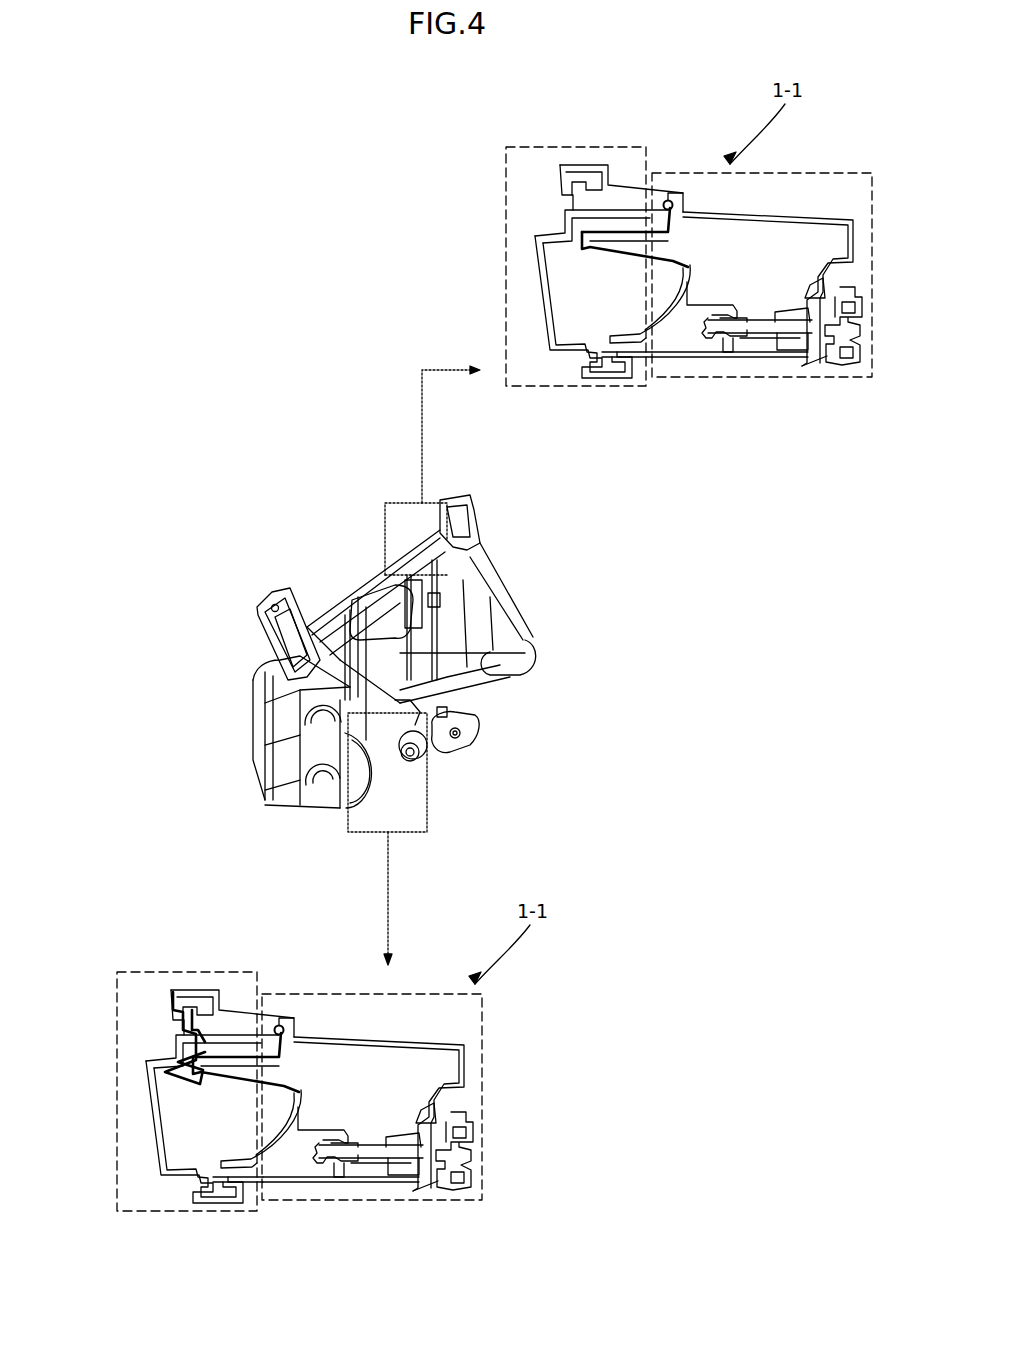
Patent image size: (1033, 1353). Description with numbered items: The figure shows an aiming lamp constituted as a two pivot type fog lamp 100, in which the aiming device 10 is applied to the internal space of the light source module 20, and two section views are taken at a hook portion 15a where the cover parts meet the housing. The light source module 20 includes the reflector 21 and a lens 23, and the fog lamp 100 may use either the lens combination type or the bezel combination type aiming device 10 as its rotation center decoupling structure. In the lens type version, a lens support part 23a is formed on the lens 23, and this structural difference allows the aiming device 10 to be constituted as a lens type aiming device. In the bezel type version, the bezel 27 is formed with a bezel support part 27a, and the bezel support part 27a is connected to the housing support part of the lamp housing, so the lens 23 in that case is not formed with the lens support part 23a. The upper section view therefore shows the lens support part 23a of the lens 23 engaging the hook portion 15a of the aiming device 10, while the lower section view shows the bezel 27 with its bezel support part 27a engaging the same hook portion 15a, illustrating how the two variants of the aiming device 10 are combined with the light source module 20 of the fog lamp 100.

The fog lamp 100 is at (228, 531).
The aiming device 10 is at (764, 378).
The hook portion 15a is at (673, 208).
The light source module 20 is at (505, 272).
The reflector 21 is at (443, 612).
The lens 23 is at (375, 583).
The lens support part 23a is at (584, 214).
The bezel 27 is at (180, 1085).
The bezel support part 27a is at (195, 1039).